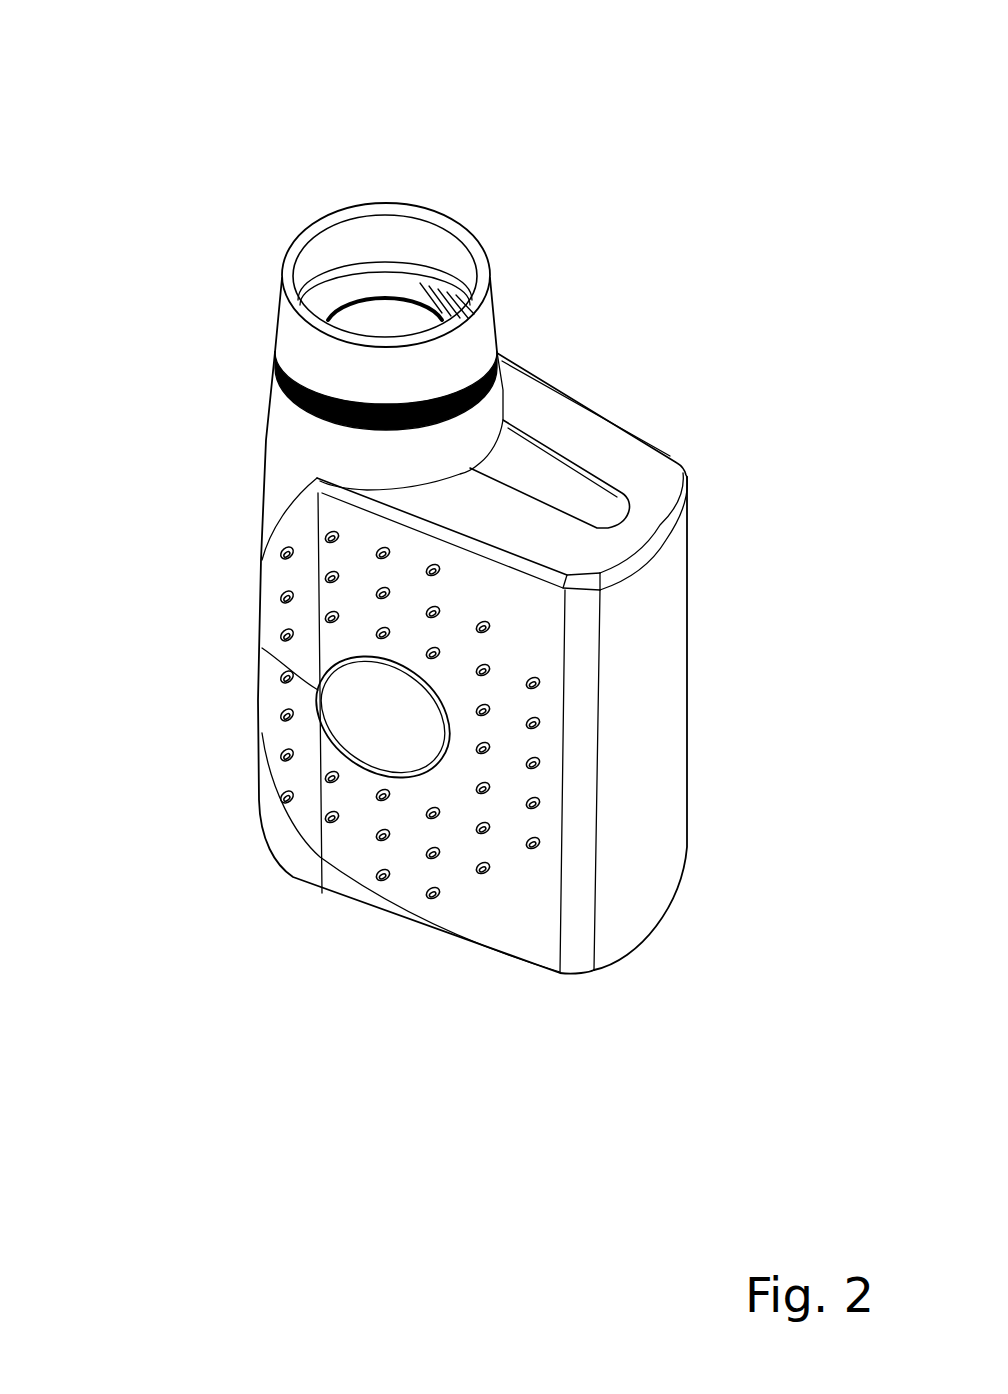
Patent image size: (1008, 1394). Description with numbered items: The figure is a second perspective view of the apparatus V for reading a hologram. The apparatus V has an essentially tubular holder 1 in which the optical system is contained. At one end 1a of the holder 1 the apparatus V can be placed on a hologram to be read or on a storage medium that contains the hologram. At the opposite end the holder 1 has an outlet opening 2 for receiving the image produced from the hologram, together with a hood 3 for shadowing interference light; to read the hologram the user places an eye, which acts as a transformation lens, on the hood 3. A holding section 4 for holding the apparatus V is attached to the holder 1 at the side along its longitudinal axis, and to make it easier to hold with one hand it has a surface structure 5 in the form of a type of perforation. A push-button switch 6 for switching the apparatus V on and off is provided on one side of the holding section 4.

The holder 1 is at (288, 448).
The end of the holder 1a is at (297, 882).
The outlet opening 2 is at (383, 322).
The hood 3 is at (287, 330).
The holding section 4 is at (652, 663).
The surface structure 5 is at (543, 727).
The push-button switch 6 is at (368, 713).
The apparatus V is at (701, 329).